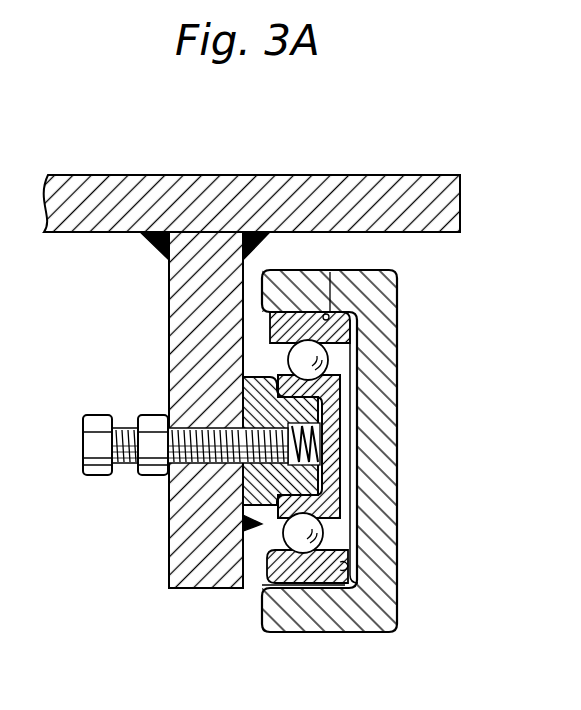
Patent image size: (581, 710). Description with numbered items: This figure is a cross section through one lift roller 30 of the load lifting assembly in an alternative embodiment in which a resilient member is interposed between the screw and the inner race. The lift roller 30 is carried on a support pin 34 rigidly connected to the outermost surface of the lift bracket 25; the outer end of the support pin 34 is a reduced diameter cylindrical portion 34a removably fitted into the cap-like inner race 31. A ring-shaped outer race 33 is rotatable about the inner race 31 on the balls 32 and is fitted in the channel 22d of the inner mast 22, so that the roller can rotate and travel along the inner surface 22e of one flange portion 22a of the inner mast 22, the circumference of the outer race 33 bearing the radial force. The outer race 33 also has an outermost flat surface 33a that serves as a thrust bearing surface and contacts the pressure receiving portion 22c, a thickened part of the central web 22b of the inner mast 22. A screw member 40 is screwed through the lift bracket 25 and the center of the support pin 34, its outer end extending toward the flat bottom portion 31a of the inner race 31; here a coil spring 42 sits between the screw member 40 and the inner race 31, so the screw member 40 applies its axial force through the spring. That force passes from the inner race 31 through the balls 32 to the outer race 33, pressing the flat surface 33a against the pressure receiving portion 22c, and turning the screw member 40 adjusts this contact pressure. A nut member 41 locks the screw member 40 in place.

The inner mast 22 is at (398, 285).
The flange portion 22a is at (287, 285).
The central web 22b is at (392, 474).
The pressure receiving portion 22c is at (375, 560).
The channel 22d is at (332, 630).
The inner surface 22e is at (330, 275).
The lift bracket 25 is at (169, 306).
The lift roller 30 is at (258, 586).
The inner race 31 is at (336, 390).
The flat bottom portion 31a is at (340, 456).
The balls 32 is at (326, 358).
The outer race 33 is at (300, 577).
The flat surface 33a is at (348, 566).
The support pin 34 is at (300, 402).
The reduced diameter cylindrical portion 34a is at (292, 508).
The screw member 40 is at (98, 477).
The nut member 41 is at (153, 477).
The coil spring 42 is at (320, 430).